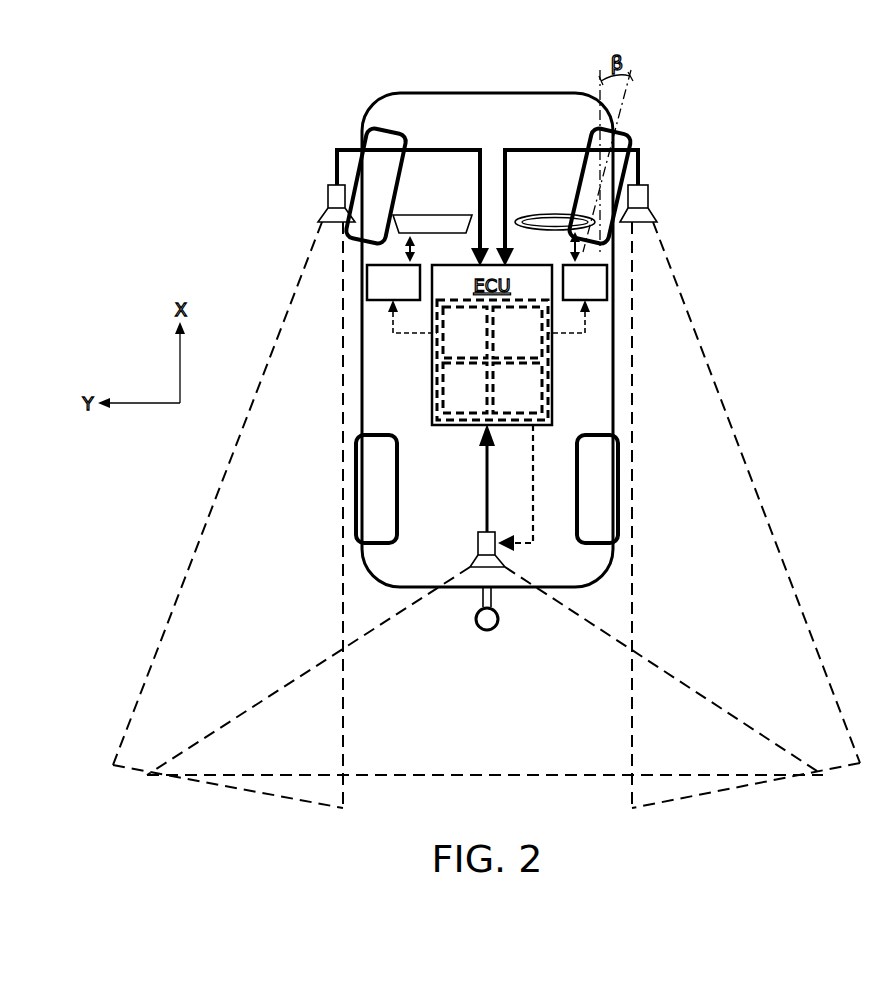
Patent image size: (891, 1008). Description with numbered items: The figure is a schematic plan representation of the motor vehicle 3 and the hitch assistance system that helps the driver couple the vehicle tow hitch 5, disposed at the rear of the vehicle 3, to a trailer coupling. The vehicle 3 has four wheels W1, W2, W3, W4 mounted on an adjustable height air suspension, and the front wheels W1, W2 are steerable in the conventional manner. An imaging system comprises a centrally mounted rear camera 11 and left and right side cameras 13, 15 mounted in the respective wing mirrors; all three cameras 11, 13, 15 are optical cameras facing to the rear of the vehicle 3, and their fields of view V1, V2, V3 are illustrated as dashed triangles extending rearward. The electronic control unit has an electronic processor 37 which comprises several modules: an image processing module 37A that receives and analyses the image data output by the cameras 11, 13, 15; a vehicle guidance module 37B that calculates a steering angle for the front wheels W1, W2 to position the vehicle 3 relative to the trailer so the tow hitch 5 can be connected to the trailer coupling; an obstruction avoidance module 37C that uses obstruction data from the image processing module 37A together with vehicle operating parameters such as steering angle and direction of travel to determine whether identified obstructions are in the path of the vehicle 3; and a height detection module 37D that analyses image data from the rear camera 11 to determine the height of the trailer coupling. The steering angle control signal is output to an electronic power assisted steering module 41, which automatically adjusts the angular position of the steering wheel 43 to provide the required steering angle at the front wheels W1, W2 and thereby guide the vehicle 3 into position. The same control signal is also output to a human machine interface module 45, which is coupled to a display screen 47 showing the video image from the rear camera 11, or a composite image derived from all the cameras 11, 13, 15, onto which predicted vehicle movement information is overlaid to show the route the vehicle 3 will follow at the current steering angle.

The motor vehicle 3 is at (782, 472).
The vehicle tow hitch 5 is at (483, 623).
The rear camera 11 is at (497, 567).
The left side camera 13 is at (337, 197).
The right side camera 15 is at (640, 195).
The electronic processor 37 is at (598, 360).
The image processing module 37A is at (465, 332).
The vehicle guidance module 37B is at (517, 332).
The obstruction avoidance module 37C is at (465, 388).
The height detection module 37D is at (532, 347).
The electronic power assisted steering (EPAS) module 41 is at (577, 299).
The steering wheel 43 is at (542, 214).
The human machine interface (HMI) module 45 is at (402, 299).
The display screen 47 is at (448, 218).
The front wheel W1 is at (367, 138).
The front wheel W2 is at (625, 142).
The wheel W3 is at (378, 497).
The wheel W4 is at (597, 497).
The field of view V1 is at (485, 671).
The field of view V2 is at (228, 515).
The field of view V3 is at (746, 515).